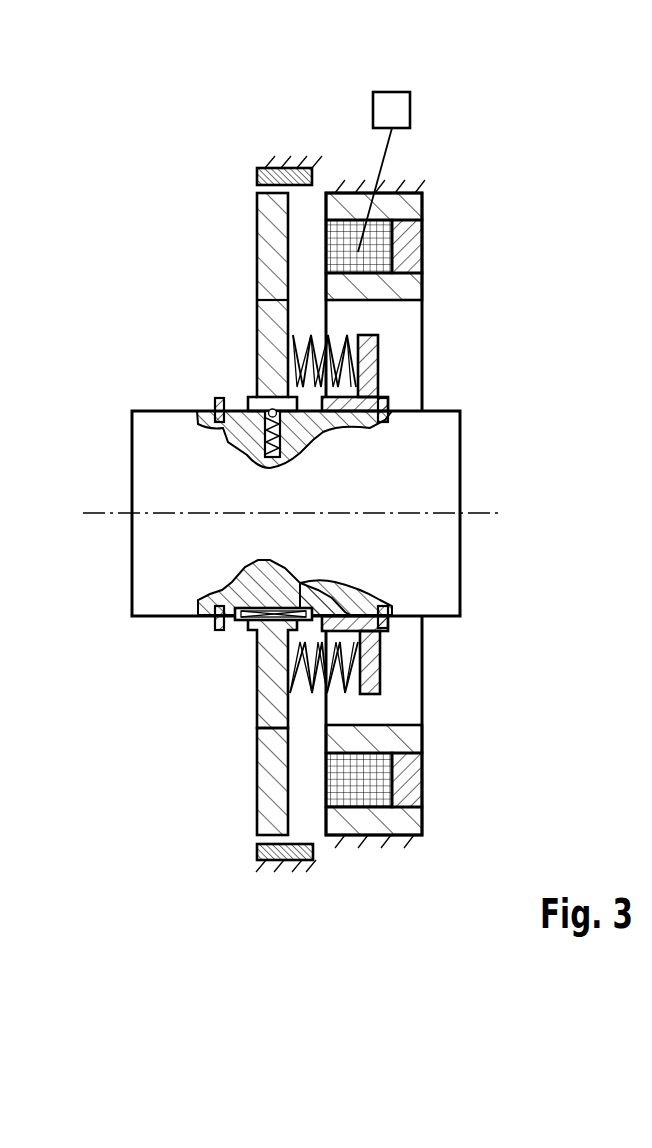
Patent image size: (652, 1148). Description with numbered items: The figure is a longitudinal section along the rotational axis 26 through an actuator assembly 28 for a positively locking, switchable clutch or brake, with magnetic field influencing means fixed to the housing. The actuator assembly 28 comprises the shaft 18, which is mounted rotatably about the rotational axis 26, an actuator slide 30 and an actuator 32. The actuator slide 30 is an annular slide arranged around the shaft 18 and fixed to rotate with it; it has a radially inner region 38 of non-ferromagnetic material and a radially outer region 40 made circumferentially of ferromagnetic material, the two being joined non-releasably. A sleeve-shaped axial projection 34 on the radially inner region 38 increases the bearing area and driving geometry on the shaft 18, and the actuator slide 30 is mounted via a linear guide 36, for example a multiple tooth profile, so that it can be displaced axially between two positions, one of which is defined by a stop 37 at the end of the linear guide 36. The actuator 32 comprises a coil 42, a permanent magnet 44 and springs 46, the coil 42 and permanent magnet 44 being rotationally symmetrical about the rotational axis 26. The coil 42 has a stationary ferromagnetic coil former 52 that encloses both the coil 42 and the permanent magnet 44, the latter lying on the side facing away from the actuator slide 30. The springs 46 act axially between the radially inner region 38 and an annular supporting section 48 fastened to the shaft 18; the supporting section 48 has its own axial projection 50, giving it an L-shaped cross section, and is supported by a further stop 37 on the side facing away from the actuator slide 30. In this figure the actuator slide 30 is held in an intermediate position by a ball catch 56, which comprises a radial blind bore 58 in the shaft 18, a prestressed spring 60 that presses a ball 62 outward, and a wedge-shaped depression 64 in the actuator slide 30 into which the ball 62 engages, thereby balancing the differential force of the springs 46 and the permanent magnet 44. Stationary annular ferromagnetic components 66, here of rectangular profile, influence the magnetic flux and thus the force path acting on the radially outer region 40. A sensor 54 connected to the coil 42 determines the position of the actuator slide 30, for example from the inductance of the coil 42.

The shaft 18 is at (147, 478).
The rotational axis 26 is at (107, 517).
The actuator assembly 28 is at (400, 237).
The actuator slide 30 is at (210, 228).
The actuator 32 is at (425, 323).
The axial projection 34 is at (340, 582).
The linear guide 36 is at (235, 625).
The stop 37 is at (217, 398).
The radially inner region 38 is at (265, 717).
The radially outer region 40 is at (265, 790).
The coil 42 is at (380, 240).
The permanent magnet 44 is at (406, 258).
The springs 46 is at (376, 352).
The supporting section 48 is at (378, 673).
The axial projection 50 is at (345, 631).
The coil former 52 is at (410, 202).
The sensor 54 is at (372, 108).
The ball catch 56 is at (302, 455).
The radial blind bore 58 is at (312, 442).
The spring 60 is at (298, 457).
The ball 62 is at (270, 407).
The wedge-shaped depression 64 is at (323, 431).
The ferromagnetic components 66 is at (268, 175).